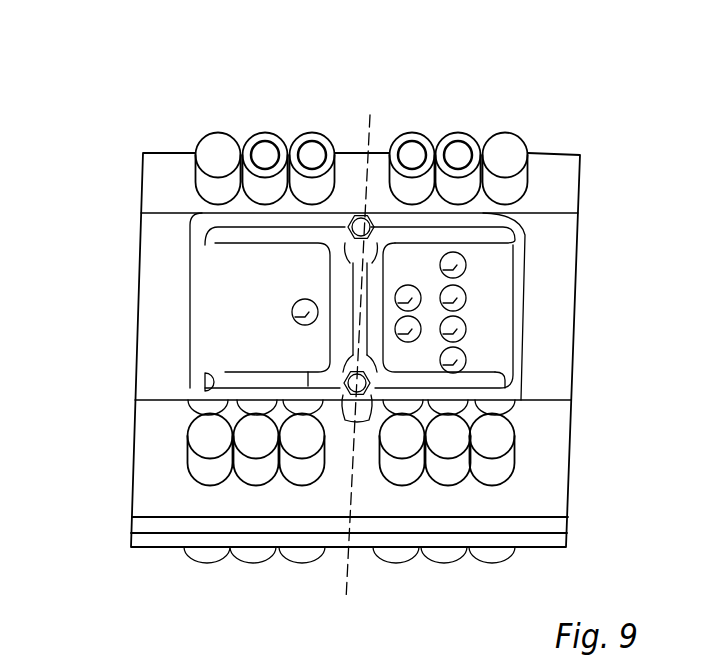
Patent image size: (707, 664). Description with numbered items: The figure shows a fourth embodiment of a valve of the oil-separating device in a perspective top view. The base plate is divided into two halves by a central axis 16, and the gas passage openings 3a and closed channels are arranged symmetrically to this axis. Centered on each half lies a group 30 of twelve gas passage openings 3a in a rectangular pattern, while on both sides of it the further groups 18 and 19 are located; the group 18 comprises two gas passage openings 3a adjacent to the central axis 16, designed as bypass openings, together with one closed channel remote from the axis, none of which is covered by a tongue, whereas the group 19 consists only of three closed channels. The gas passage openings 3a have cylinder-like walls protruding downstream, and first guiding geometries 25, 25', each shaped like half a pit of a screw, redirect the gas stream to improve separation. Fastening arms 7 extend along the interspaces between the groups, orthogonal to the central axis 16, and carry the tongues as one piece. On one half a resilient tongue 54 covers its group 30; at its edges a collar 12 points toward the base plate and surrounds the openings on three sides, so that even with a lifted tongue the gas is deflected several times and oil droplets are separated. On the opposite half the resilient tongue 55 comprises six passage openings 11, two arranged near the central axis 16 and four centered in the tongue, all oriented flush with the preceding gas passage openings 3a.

The group 18 is at (255, 137).
The first guiding geometry 25 is at (294, 101).
The central axis 16 is at (367, 128).
The first guiding geometry 25' is at (525, 200).
The gas passage opening 3a is at (463, 137).
The fastening arm 7 is at (190, 213).
The resilient tongue 54 is at (238, 310).
The collar 12 is at (233, 380).
The group 30 is at (237, 420).
The group 19 is at (183, 455).
The resilient tongue 55 is at (487, 283).
The passage opening 11 is at (467, 295).